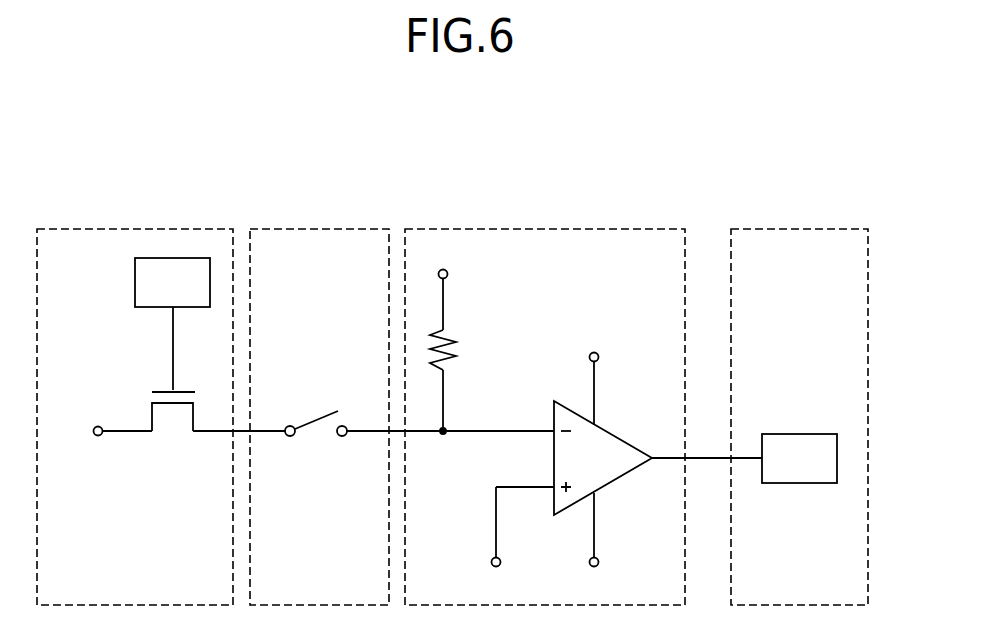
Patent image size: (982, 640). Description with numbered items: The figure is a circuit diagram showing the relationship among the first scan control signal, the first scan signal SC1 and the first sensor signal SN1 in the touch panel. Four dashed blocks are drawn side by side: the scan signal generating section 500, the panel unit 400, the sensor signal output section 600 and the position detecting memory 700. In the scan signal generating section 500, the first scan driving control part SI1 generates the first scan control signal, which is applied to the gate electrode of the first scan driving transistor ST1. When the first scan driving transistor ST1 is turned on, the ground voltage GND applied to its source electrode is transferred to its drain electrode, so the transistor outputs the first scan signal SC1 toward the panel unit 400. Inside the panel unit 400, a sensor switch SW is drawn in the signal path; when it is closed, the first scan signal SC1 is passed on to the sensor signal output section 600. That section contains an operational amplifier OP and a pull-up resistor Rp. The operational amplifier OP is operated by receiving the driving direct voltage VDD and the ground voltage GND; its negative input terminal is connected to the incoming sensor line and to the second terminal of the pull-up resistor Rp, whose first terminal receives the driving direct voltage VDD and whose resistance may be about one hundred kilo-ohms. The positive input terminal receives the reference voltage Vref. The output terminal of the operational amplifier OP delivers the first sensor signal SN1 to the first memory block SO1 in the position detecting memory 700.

The scan signal generating section 500 is at (134, 229).
The panel unit 400 is at (318, 229).
The sensor signal output section 600 is at (542, 229).
The position detecting memory 700 is at (799, 229).
The first scan driving control part SI1 is at (172, 282).
The first scan driving transistor ST1 is at (175, 444).
The first scan signal SC1 is at (242, 426).
The sensor switch SW is at (319, 442).
The pull-up resistor Rp is at (460, 355).
The operational amplifier OP is at (618, 432).
The first sensor signal SN1 is at (708, 451).
The first memory block SO1 is at (799, 458).
The driving direct voltage VDD is at (520, 334).
The ground voltage GND is at (333, 507).
The reference voltage Vref is at (499, 541).